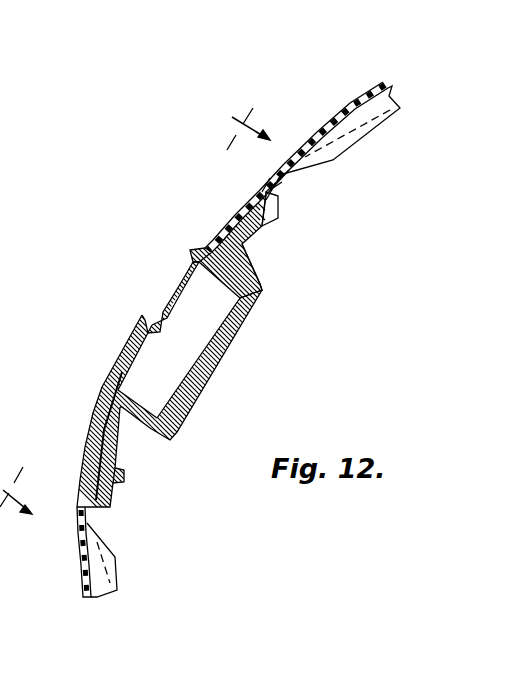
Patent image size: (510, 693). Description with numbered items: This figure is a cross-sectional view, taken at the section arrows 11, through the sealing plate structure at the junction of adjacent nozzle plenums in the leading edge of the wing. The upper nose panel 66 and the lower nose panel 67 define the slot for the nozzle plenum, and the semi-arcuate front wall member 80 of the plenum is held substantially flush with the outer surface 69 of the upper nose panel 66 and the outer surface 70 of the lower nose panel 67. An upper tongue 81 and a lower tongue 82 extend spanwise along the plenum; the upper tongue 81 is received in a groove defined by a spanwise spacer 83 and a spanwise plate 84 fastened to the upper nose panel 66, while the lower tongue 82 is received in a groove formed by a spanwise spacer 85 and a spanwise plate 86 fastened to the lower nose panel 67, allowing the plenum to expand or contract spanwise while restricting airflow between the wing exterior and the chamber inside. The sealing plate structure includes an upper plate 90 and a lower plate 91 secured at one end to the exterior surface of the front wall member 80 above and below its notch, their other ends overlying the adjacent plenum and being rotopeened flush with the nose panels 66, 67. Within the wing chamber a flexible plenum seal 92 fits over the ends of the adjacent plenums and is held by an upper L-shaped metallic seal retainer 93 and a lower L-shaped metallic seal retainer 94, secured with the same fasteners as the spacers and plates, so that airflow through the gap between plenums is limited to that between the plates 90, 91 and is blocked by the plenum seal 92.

The upper nose panel 66 is at (346, 113).
The outer surface of upper nose panel 69 is at (282, 166).
The section line 11- 11 is at (137, 318).
The spanwise spacer 83 is at (246, 193).
The spanwise plate 84 is at (279, 199).
The upper tongue 81 is at (204, 238).
The upper plate 90 is at (190, 250).
The upper L-shaped metallic seal retainer 93 is at (246, 243).
The front wall member 80 is at (174, 293).
The flexible plenum seal 92 is at (257, 303).
The lower L-shaped metallic seal retainer 94 is at (149, 440).
The lower plate 91 is at (132, 346).
The lower tongue 82 is at (106, 411).
The spanwise spacer 85 is at (94, 446).
The spanwise plate 86 is at (98, 483).
The outer surface of lower nose panel 70 is at (77, 546).
The lower nose panel 67 is at (82, 571).